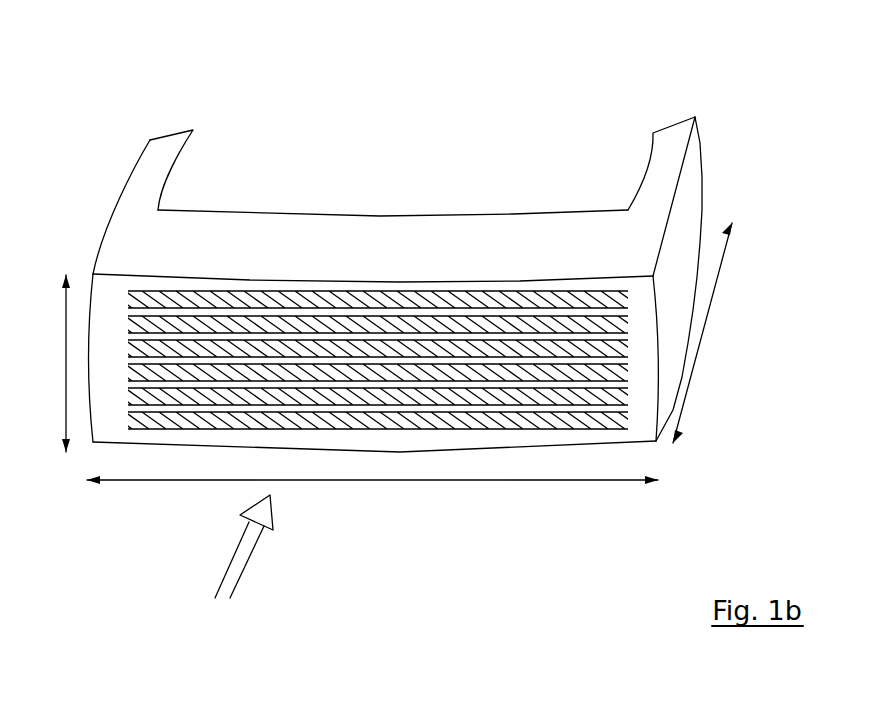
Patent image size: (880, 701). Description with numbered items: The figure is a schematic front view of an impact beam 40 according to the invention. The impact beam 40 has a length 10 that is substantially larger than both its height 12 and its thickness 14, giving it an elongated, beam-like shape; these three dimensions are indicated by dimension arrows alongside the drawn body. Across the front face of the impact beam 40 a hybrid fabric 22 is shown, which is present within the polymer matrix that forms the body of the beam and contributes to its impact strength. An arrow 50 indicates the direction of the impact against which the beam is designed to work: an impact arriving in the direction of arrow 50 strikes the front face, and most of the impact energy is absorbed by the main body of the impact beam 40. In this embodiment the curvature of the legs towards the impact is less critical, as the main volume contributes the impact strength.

The impact beam 40 is at (522, 71).
The hybrid fabric 22 is at (303, 300).
The length 10 is at (372, 499).
The height 12 is at (47, 363).
The thickness 14 is at (705, 333).
The arrow 50 is at (235, 566).